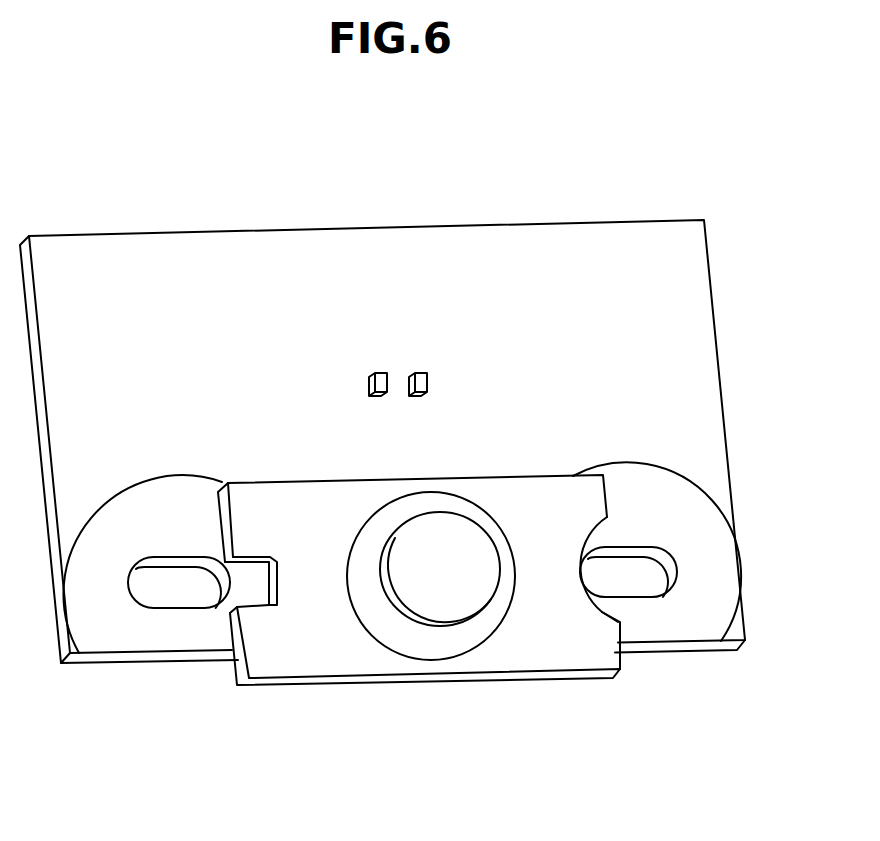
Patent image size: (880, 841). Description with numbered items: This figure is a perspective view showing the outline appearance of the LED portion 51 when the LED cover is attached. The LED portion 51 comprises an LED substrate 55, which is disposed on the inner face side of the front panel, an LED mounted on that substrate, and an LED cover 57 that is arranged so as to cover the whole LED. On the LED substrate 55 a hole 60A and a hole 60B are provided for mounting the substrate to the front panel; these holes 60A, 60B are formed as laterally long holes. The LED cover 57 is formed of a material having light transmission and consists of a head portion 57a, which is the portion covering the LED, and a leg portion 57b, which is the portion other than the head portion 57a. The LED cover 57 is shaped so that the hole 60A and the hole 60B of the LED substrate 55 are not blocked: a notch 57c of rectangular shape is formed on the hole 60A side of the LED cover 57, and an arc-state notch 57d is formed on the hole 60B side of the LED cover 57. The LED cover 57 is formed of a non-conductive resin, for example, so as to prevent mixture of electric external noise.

The LED portion 51 is at (152, 195).
The LED substrate 55 is at (307, 228).
The LED cover 57 is at (317, 480).
The head portion 57a is at (443, 614).
The leg portion 57b is at (372, 683).
The notch 57c is at (272, 581).
The arc-state notch 57d is at (600, 604).
The hole 60A is at (165, 593).
The hole 60B is at (642, 588).